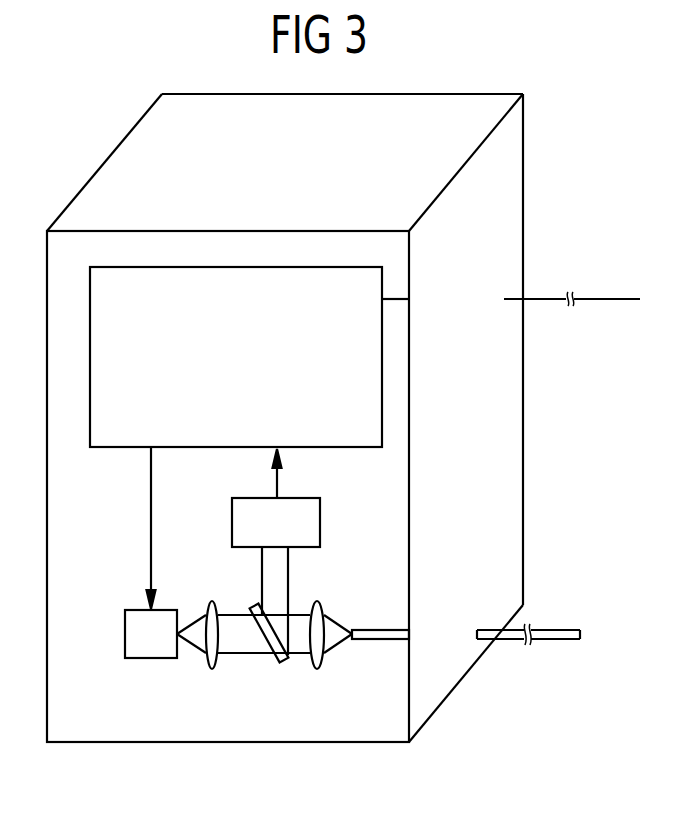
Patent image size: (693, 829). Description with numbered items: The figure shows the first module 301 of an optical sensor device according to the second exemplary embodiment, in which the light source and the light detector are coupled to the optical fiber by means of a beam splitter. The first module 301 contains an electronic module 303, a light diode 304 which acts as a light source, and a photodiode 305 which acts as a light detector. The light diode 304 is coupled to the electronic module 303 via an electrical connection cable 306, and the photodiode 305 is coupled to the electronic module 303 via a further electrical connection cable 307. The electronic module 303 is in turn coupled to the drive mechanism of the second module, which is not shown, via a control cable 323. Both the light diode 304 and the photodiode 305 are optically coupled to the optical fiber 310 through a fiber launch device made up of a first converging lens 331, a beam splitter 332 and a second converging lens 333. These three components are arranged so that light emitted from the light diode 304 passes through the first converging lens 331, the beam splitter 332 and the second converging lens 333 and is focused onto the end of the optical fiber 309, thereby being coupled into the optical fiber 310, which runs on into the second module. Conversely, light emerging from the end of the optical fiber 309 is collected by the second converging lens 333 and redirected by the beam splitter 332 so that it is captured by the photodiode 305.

The first module 301 is at (227, 743).
The electronic module 303 is at (382, 375).
The light diode 304 is at (152, 658).
The photodiode 305 is at (320, 520).
The electrical connection cable 306 is at (151, 497).
The electrical connection cable 307 is at (277, 488).
The end of the optical fiber 309 is at (349, 630).
The optical fiber 310 is at (390, 639).
The control cable 323 is at (393, 299).
The first converging lens 331 is at (213, 601).
The beam splitter 332 is at (284, 662).
The second converging lens 333 is at (318, 669).